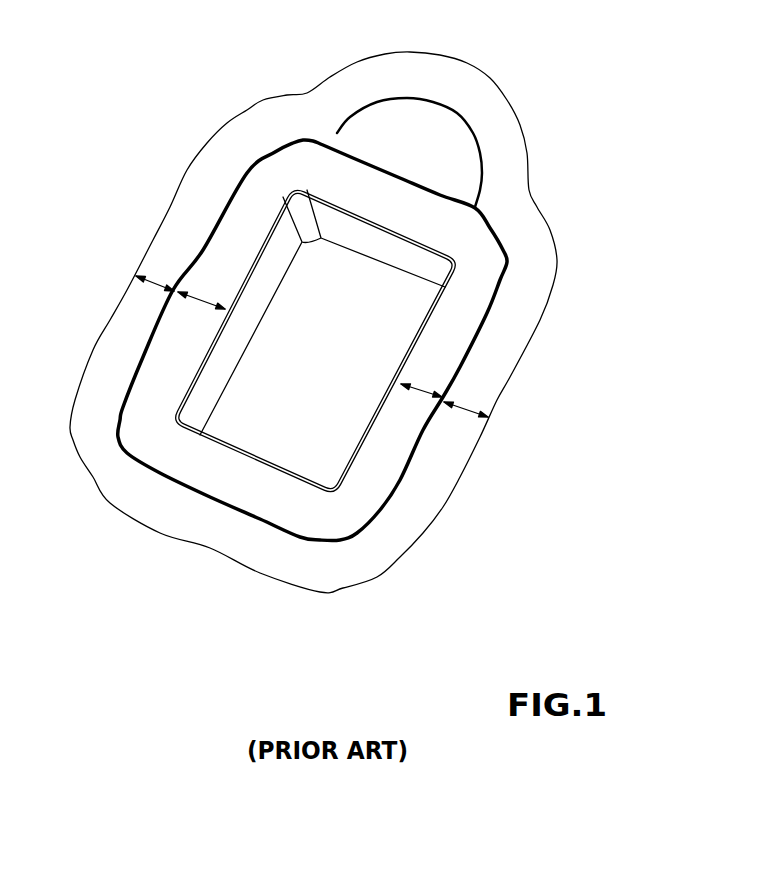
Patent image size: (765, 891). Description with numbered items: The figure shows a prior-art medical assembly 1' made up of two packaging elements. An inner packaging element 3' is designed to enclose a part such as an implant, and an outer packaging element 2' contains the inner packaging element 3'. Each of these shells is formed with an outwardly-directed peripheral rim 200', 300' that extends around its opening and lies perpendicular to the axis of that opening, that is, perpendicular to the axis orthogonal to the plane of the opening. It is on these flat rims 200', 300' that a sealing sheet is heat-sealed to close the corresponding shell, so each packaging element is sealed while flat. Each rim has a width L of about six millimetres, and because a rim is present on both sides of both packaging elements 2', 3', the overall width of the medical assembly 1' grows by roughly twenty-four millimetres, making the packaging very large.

The medical assembly 1' is at (342, 301).
The outer packaging element 2' is at (409, 152).
The inner packaging element 3' is at (322, 312).
The outwardly-directed peripheral rim 200' is at (356, 322).
The outwardly-directed peripheral rim 300' is at (329, 340).
The rim width L is at (153, 284).